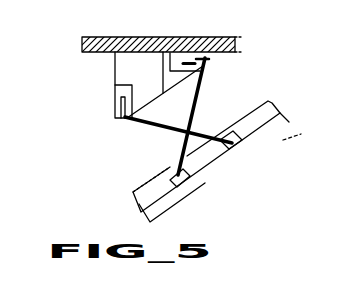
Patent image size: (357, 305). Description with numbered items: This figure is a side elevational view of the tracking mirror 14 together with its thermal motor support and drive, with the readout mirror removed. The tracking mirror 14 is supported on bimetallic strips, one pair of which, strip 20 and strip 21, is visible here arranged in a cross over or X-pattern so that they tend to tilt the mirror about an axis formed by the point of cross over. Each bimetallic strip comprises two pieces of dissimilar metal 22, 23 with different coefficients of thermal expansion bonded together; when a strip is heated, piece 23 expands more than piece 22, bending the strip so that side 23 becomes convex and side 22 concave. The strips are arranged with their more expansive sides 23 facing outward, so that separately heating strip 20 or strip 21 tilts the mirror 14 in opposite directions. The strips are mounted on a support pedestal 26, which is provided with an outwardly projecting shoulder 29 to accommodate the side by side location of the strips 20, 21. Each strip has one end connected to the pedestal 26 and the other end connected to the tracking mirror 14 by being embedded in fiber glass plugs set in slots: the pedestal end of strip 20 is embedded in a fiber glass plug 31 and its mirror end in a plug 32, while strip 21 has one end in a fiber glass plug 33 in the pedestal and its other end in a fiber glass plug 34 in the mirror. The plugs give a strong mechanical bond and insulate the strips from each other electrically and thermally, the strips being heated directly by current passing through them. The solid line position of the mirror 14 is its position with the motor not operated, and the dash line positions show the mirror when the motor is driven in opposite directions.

The tracking mirror 14 is at (288, 128).
The bimetallic strip 20 is at (177, 89).
The bimetallic strip 21 is at (137, 129).
The piece of dissimilar metal 22 is at (195, 104).
The piece of dissimilar metal 23 is at (195, 104).
The support pedestal 26 is at (116, 67).
The outwardly projecting shoulder 29 is at (168, 61).
The fiber glass plug 31 is at (198, 56).
The fiber glass plug 32 is at (193, 168).
The fiber glass plug 33 is at (118, 90).
The fiber glass plug 34 is at (236, 148).